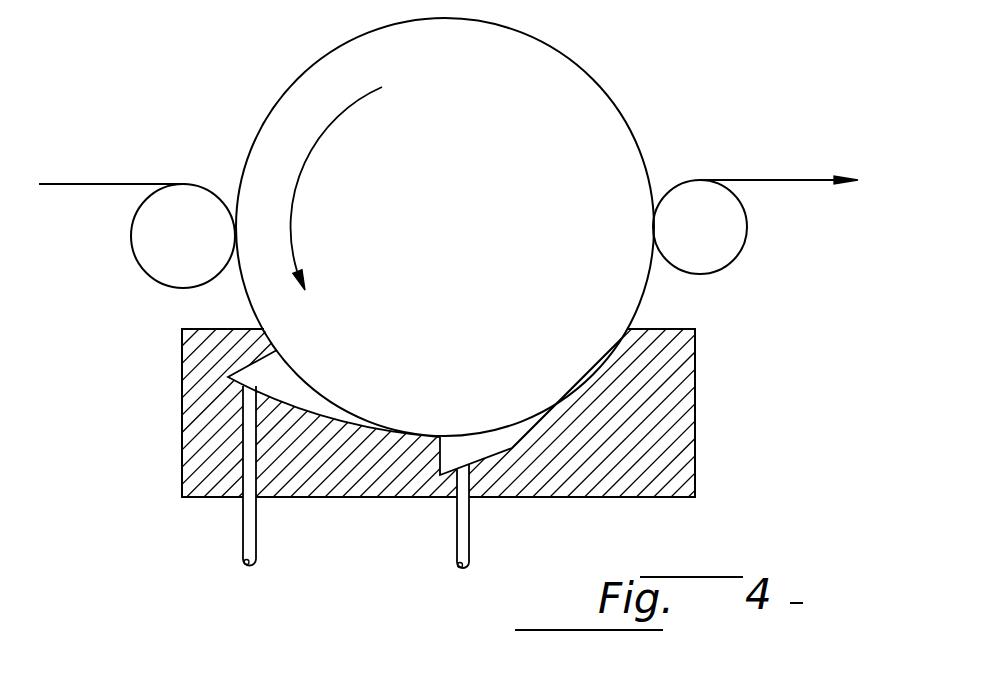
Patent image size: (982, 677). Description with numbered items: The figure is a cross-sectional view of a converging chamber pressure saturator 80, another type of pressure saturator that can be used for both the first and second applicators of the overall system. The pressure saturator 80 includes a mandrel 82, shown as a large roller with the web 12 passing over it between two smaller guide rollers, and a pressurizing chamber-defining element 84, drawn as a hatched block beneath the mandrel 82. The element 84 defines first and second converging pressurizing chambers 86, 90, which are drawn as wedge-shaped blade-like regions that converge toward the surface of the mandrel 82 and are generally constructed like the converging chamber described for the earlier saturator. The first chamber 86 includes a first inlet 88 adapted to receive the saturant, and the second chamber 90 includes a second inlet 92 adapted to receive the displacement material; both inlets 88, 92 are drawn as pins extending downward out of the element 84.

The web 12 is at (767, 180).
The converging chamber pressure saturator 80 is at (123, 311).
The mandrel 82 is at (300, 97).
The pressurizing chamber-defining element 84 is at (690, 402).
The first converging pressurizing chamber 86 is at (292, 387).
The first inlet 88 is at (257, 541).
The second converging pressurizing chamber 90 is at (478, 447).
The second inlet 92 is at (470, 536).